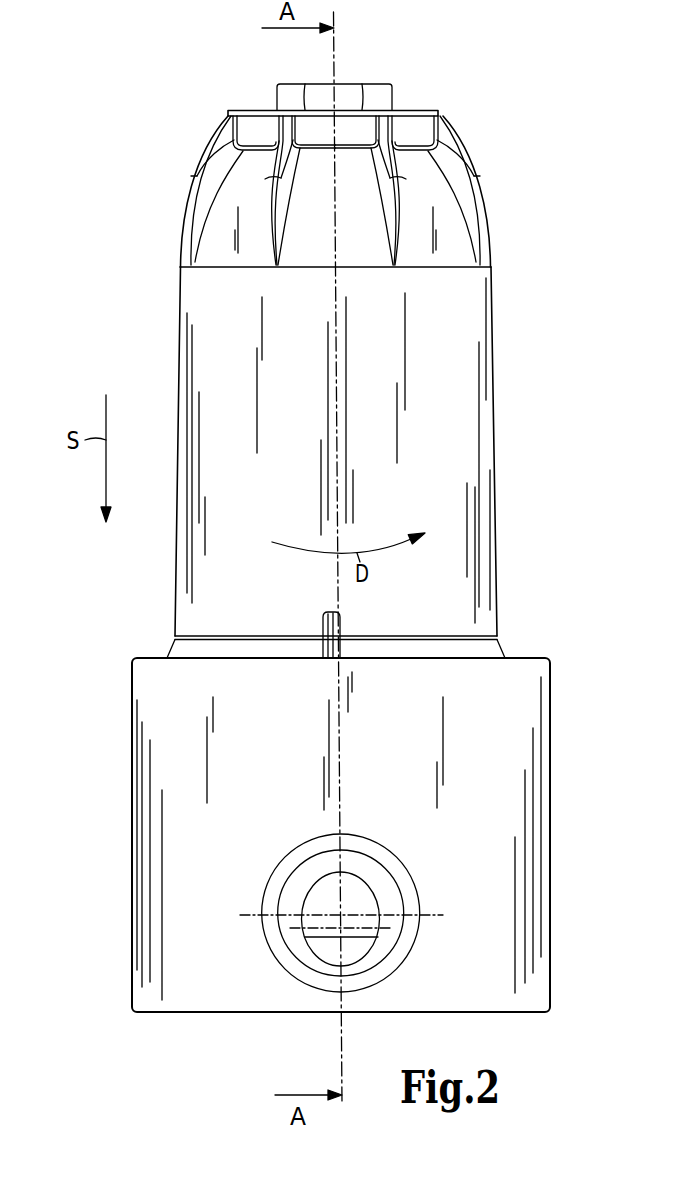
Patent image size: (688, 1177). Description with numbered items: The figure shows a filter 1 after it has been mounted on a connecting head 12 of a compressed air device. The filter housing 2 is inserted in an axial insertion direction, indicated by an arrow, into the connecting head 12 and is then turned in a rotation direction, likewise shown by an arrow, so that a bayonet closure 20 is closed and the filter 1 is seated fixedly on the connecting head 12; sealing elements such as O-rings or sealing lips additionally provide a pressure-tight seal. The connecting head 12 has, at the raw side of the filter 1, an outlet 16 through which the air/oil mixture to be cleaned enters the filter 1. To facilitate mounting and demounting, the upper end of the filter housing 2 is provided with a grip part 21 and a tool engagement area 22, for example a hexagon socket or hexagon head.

The filter 1 is at (138, 217).
The filter housing 2 is at (477, 395).
The connecting head 12 is at (532, 812).
The outlet 16 is at (321, 964).
The bayonet closure 20 is at (210, 752).
The grip part 21 is at (463, 154).
The tool engagement area 22 is at (291, 100).